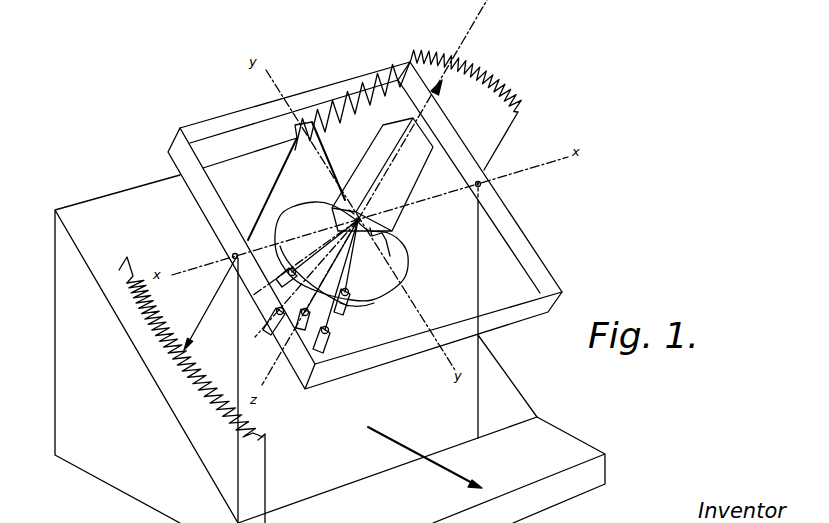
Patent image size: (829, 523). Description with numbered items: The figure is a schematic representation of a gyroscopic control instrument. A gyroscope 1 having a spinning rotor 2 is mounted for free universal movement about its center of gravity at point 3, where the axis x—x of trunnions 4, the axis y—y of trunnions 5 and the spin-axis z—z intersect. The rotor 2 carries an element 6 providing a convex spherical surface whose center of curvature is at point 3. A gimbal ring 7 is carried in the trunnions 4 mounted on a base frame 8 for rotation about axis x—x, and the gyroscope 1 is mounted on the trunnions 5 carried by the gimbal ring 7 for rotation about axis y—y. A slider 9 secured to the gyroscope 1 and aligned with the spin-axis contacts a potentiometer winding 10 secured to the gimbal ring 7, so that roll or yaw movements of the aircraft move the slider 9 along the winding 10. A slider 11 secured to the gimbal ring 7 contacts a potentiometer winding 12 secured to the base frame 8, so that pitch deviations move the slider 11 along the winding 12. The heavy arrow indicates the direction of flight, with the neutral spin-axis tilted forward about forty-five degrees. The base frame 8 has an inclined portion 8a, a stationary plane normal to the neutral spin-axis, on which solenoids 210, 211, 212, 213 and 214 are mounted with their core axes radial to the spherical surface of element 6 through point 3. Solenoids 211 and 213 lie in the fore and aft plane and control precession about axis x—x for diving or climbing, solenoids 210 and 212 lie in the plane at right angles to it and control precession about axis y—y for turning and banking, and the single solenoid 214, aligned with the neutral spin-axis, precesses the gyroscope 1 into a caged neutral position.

The gyroscope 1 is at (413, 172).
The spinning rotor 2 is at (403, 271).
The point 3 is at (358, 218).
The trunnions 4 is at (233, 257).
The trunnions 5 is at (350, 206).
The element 6 is at (358, 302).
The gimbal ring 7 is at (517, 237).
The base frame 8 is at (553, 438).
The inclined portion 8a is at (501, 378).
The slider 9 is at (437, 90).
The potentiometer winding 10 is at (493, 75).
The slider 11 is at (188, 349).
The potentiometer winding 12 is at (232, 430).
The solenoid 210 is at (272, 328).
The solenoid 211 is at (294, 264).
The solenoid 212 is at (343, 313).
The solenoid 213 is at (328, 350).
The solenoid 214 is at (302, 333).